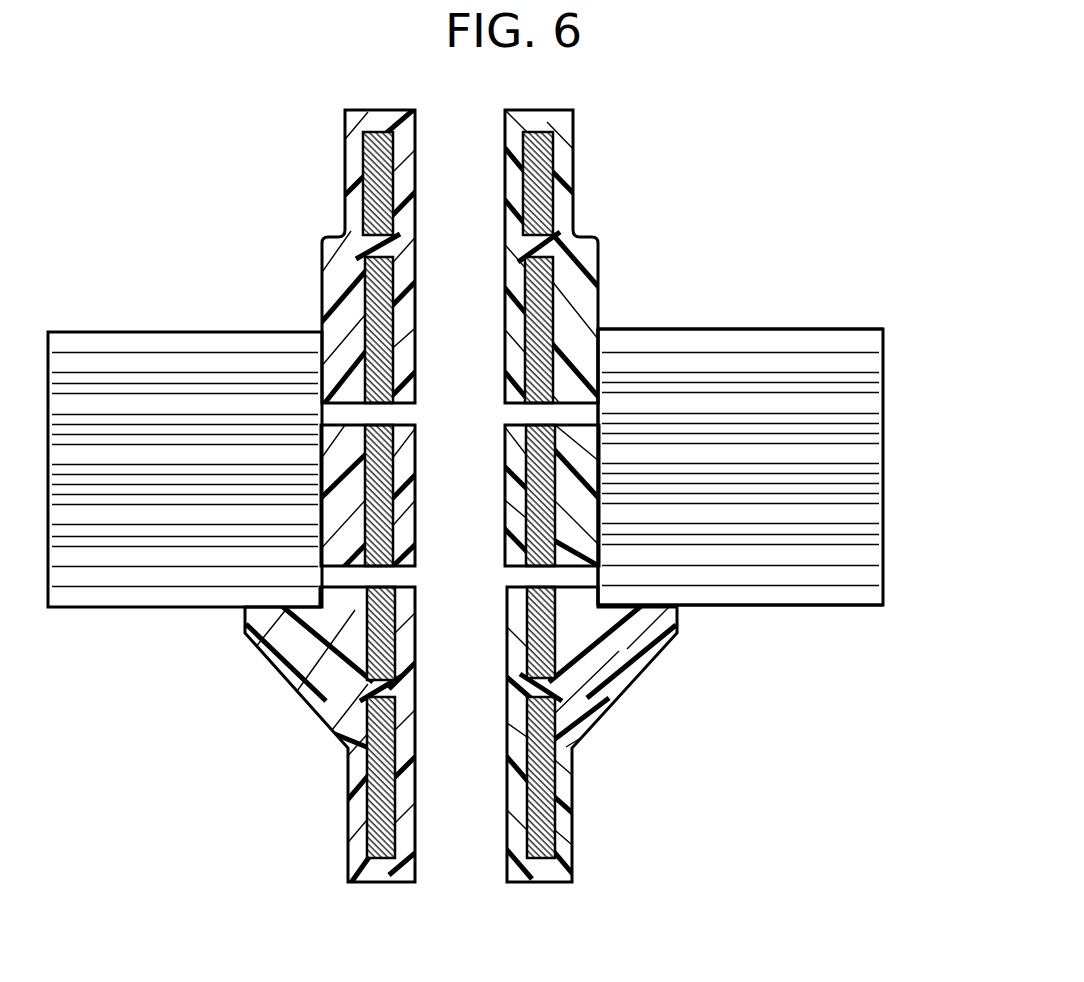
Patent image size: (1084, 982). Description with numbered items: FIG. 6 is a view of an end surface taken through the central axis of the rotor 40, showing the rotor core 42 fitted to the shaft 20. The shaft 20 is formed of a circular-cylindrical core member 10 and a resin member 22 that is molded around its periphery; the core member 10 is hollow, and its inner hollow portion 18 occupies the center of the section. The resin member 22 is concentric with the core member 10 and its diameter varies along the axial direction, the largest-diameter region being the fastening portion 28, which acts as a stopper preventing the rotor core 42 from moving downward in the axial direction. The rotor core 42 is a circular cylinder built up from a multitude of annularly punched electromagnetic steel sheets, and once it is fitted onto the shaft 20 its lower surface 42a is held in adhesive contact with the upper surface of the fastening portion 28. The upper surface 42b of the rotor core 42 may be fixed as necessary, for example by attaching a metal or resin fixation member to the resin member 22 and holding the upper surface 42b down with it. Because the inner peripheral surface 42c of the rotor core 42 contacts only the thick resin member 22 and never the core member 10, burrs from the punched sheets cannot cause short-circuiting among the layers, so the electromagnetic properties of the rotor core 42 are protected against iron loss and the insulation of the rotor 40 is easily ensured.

The core member 10 is at (540, 130).
The inner hollow portion 18 is at (479, 252).
The shaft 20 is at (574, 151).
The resin member 22 is at (576, 182).
The fastening portion 28 is at (675, 623).
The rotor 40 is at (798, 134).
The rotor core 42 is at (884, 395).
The lower surface of the rotor core 42a is at (781, 608).
The upper surface of the rotor core 42b is at (782, 328).
The inner peripheral surface of the rotor core 42c is at (578, 328).